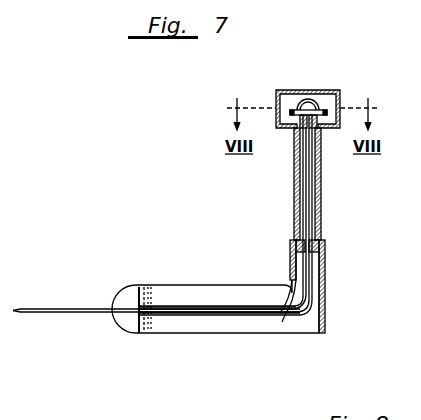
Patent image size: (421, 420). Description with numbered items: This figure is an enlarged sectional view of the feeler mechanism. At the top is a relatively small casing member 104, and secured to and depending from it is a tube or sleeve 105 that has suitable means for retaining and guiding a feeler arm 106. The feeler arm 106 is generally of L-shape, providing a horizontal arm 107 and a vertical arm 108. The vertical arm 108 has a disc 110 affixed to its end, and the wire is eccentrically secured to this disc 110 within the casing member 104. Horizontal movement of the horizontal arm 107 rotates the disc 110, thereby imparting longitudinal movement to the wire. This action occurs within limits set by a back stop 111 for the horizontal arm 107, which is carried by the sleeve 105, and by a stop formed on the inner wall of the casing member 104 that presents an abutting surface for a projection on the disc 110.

The casing member 104 is at (310, 91).
The tube or sleeve 105 is at (295, 176).
The feeler arm 106 is at (236, 318).
The horizontal arm 107 is at (50, 309).
The vertical arm 108 is at (307, 212).
The disc 110 is at (297, 112).
The back stop 111 is at (204, 290).